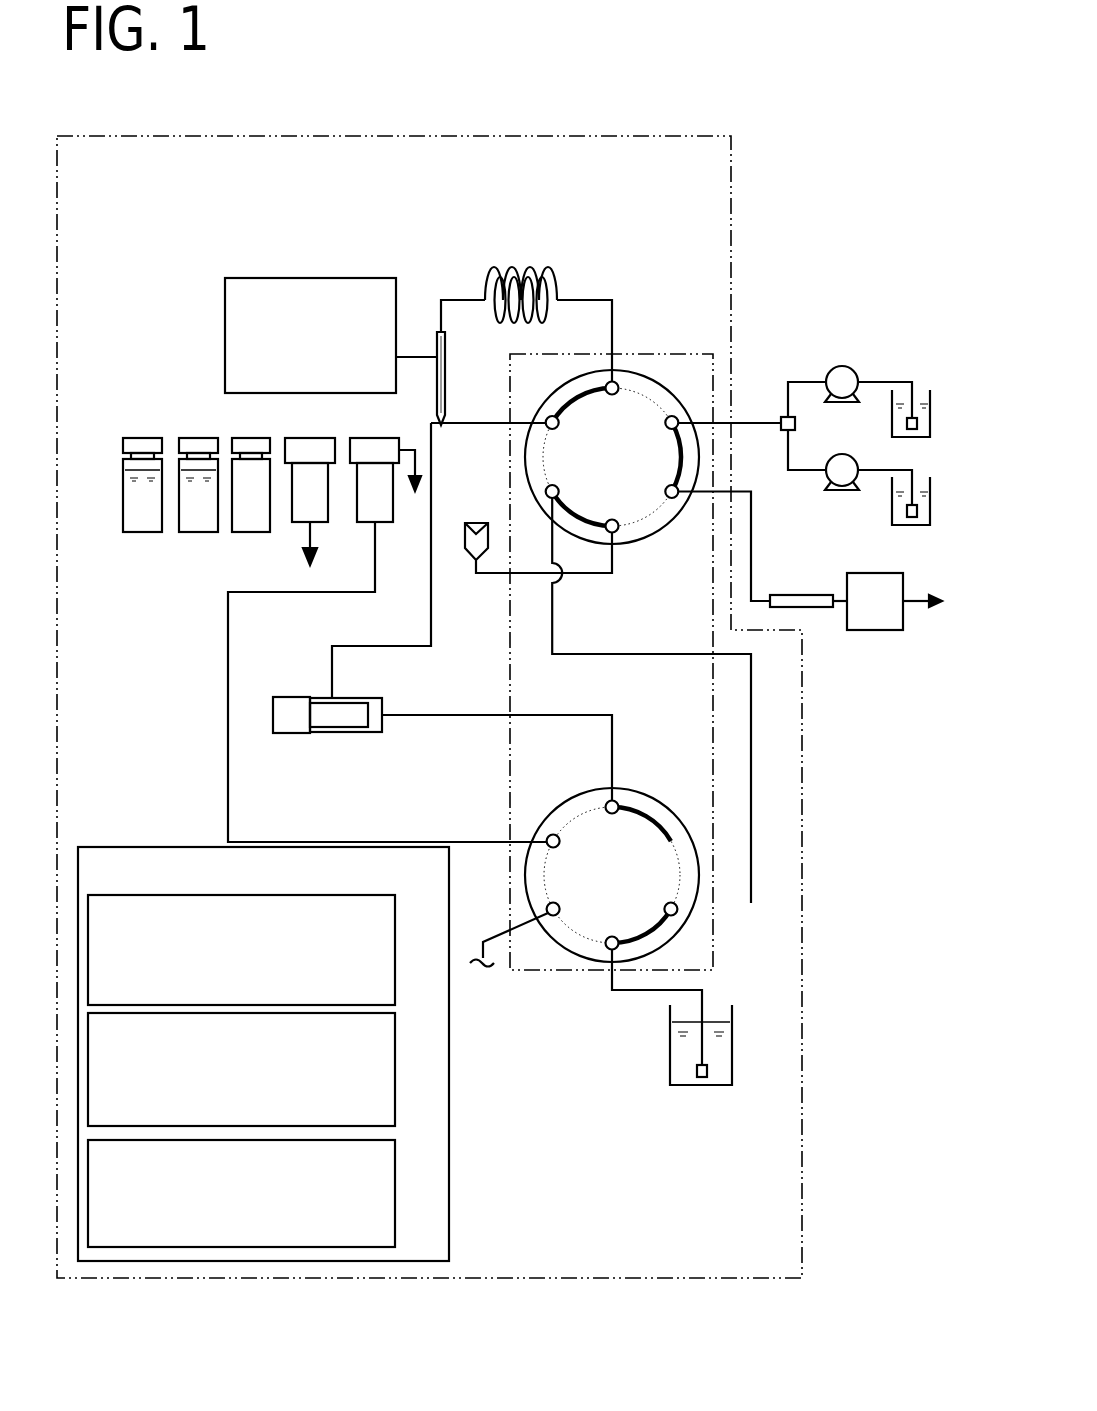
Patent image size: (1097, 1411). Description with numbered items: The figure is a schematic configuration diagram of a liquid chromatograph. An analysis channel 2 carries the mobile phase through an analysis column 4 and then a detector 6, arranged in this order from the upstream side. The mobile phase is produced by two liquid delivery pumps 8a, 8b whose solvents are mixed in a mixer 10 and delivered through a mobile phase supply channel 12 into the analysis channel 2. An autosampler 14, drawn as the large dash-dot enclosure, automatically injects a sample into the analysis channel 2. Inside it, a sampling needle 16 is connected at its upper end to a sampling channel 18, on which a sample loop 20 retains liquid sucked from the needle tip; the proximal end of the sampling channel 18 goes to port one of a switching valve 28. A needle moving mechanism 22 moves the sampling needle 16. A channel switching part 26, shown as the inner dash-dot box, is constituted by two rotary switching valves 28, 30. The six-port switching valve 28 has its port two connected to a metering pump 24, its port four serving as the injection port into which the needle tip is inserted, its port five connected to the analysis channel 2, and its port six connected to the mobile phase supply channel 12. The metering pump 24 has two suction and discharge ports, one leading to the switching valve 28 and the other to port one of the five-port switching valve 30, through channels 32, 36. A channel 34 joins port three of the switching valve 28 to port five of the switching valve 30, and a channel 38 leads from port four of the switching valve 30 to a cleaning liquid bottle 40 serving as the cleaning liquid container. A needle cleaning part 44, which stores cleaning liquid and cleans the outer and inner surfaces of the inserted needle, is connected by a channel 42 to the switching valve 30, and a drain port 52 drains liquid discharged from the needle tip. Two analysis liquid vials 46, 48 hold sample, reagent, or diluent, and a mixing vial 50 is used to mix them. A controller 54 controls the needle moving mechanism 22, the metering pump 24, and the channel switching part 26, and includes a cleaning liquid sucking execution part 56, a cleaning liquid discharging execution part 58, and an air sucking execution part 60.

The analysis channel 2 is at (754, 532).
The analysis column 4 is at (818, 593).
The detector 6 is at (876, 632).
The liquid delivery pump 8a is at (852, 367).
The liquid delivery pump 8b is at (852, 455).
The mixer 10 is at (780, 415).
The mobile phase supply channel 12 is at (745, 427).
The autosampler 14 is at (711, 133).
The sampling needle 16 is at (447, 385).
The sampling channel 18 is at (603, 297).
The sample loop 20 is at (535, 265).
The needle moving mechanism 22 is at (257, 276).
The metering pump 24 is at (293, 697).
The channel switching part 26 is at (680, 350).
The switching valve 28 is at (630, 370).
The switching valve 30 is at (629, 788).
The channel 32 is at (434, 608).
The channel 34 is at (640, 652).
The channel 36 is at (468, 712).
The channel 38 is at (642, 993).
The cleaning liquid bottle 40 is at (734, 1048).
The channel 42 is at (399, 840).
The needle cleaning part 44 is at (392, 532).
The analysis liquid vial 46 is at (148, 535).
The analysis liquid vial 48 is at (204, 535).
The mixing vial 50 is at (257, 535).
The drain port 52 is at (327, 532).
The controller 54 is at (450, 900).
The cleaning liquid sucking execution part 56 is at (396, 907).
The cleaning liquid discharging execution part 58 is at (396, 1035).
The air sucking execution part 60 is at (396, 1170).